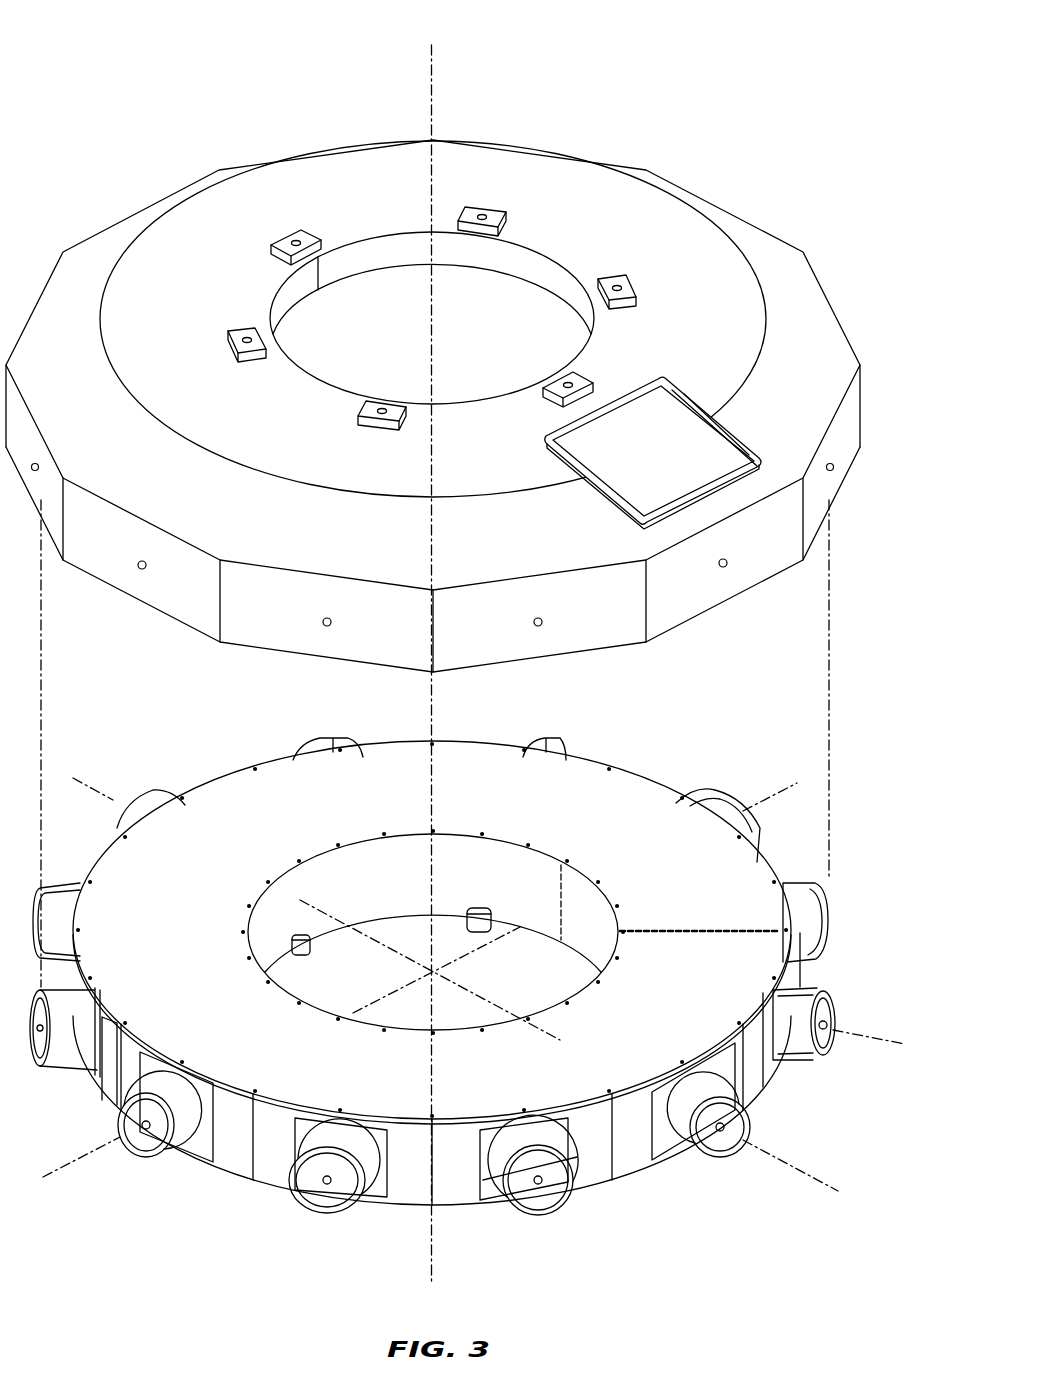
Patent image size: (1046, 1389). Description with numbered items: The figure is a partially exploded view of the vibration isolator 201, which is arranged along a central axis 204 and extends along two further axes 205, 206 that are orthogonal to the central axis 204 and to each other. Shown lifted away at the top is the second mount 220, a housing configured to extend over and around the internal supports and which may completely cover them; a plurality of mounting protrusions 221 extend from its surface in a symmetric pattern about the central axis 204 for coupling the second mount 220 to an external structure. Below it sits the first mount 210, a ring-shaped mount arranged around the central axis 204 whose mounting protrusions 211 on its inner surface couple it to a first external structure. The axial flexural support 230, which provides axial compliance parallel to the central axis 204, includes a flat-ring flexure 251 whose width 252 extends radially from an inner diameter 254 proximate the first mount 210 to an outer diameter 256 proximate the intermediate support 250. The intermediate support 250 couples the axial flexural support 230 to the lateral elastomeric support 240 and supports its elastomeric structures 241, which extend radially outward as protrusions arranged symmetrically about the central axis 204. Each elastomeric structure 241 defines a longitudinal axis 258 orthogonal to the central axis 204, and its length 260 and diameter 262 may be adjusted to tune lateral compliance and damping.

The vibration isolator 201 is at (232, 48).
The central axis 204 is at (432, 77).
The axis 205 is at (87, 1153).
The axis 206 is at (808, 1175).
The first mount 210 is at (410, 826).
The mounting protrusion 211 is at (487, 918).
The second mount 220 is at (697, 166).
The mounting protrusion 221 is at (633, 278).
The axial flexural support 230 is at (668, 777).
The lateral elastomeric support 240 is at (846, 940).
The elastomeric structure 241 is at (193, 1137).
The intermediate support 250 is at (645, 1176).
The flexure 251 is at (228, 805).
The width 252 is at (697, 930).
The inner diameter 254 is at (588, 882).
The outer diameter 256 is at (785, 900).
The longitudinal axis 258 is at (894, 1043).
The length 260 is at (478, 1177).
The diameter 262 is at (563, 1173).